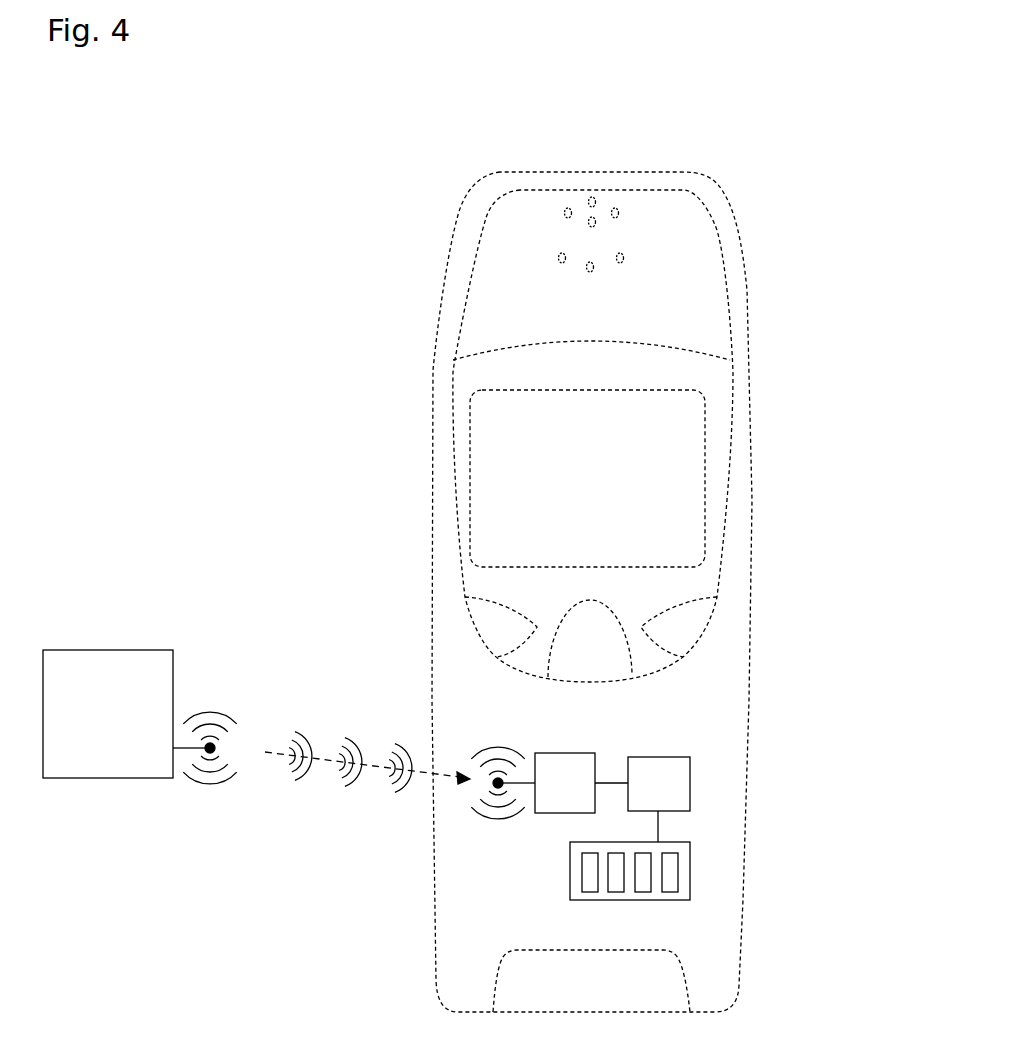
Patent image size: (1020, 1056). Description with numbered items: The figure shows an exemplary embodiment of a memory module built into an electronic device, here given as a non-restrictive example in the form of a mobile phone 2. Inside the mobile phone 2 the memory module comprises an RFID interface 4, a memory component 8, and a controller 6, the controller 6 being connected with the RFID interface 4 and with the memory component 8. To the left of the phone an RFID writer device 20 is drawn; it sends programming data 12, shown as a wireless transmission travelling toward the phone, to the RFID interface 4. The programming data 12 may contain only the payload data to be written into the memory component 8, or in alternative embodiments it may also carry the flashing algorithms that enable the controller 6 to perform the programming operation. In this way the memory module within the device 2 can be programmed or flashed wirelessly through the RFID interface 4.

The mobile phone 2 is at (422, 342).
The RFID interface 4 is at (563, 775).
The controller 6 is at (665, 777).
The memory component 8 is at (683, 853).
The programming data 12 is at (373, 808).
The RFID writer device 20 is at (120, 803).